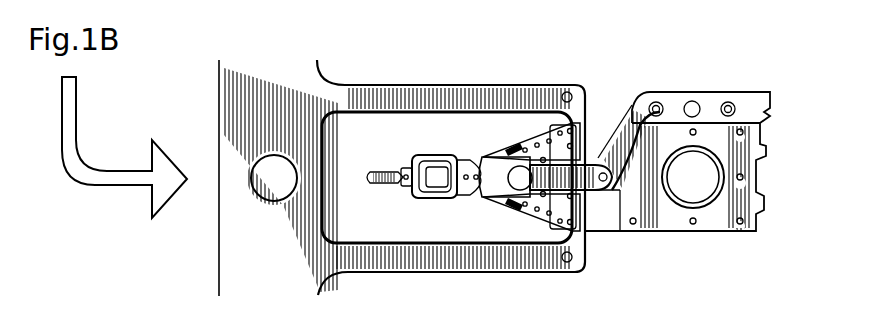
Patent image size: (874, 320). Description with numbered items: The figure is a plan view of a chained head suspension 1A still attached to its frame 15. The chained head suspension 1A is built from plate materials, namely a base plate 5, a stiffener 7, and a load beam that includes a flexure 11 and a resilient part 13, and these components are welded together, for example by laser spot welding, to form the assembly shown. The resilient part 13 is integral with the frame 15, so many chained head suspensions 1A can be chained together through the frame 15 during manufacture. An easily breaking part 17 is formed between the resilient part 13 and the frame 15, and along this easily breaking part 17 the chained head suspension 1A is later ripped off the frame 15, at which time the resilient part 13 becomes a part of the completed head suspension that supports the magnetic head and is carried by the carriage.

The chained head suspension 1A is at (618, 98).
The base plate 5 is at (716, 160).
The stiffener 7 is at (660, 231).
The flexure 11 is at (678, 92).
The resilient part 13 is at (557, 110).
The frame 15 is at (378, 86).
The easily breaking part 17 is at (583, 100).